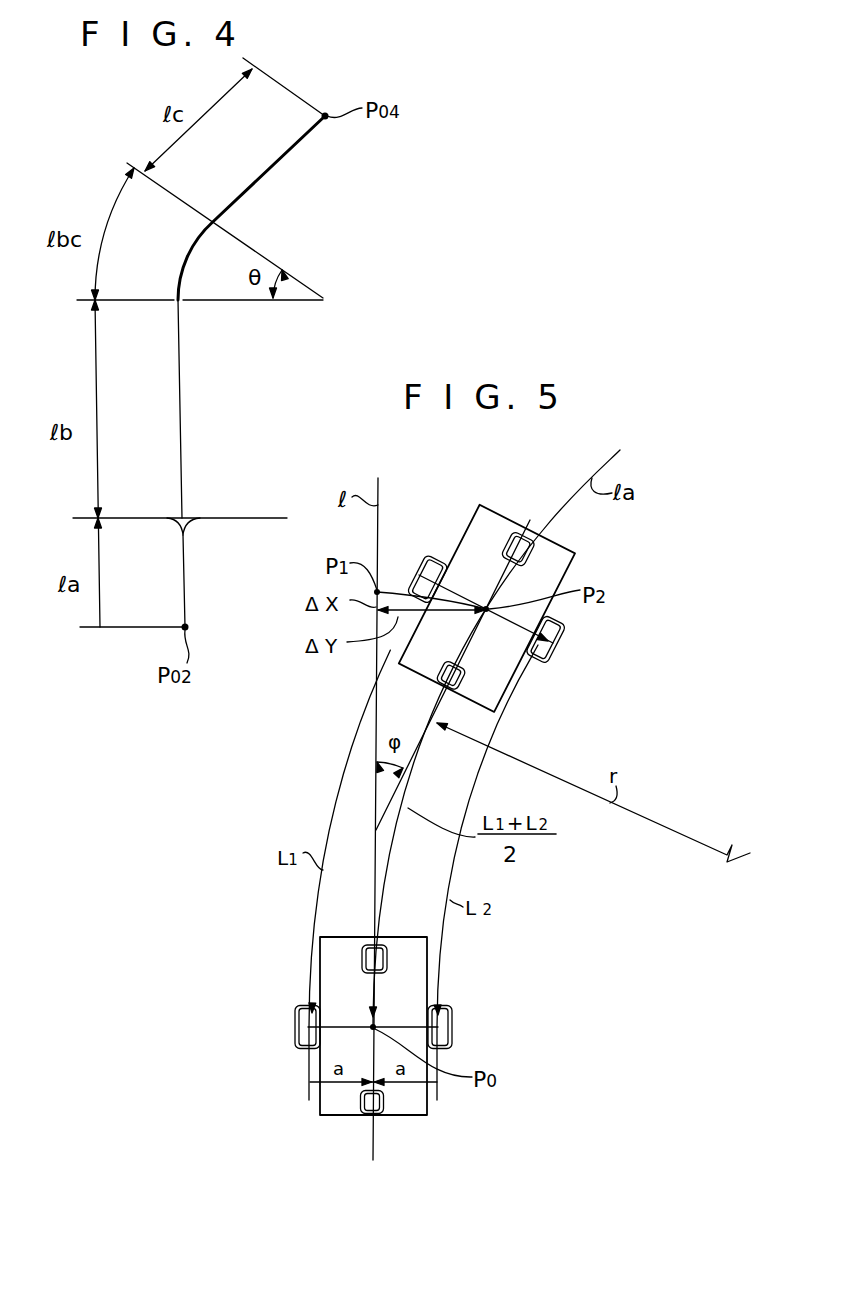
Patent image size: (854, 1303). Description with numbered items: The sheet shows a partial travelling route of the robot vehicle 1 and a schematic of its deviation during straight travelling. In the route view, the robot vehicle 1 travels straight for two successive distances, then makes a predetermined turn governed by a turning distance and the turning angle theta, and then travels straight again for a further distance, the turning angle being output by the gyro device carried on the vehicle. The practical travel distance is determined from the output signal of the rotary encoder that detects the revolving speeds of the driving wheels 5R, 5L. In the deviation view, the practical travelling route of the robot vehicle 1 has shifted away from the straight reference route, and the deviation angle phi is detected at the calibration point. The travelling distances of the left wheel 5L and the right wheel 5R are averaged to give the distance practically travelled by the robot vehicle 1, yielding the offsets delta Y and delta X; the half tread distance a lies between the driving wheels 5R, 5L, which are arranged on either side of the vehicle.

The robot vehicle 1 is at (474, 530).
The left driving wheel 5L is at (275, 1027).
The right driving wheel 5R is at (468, 1027).